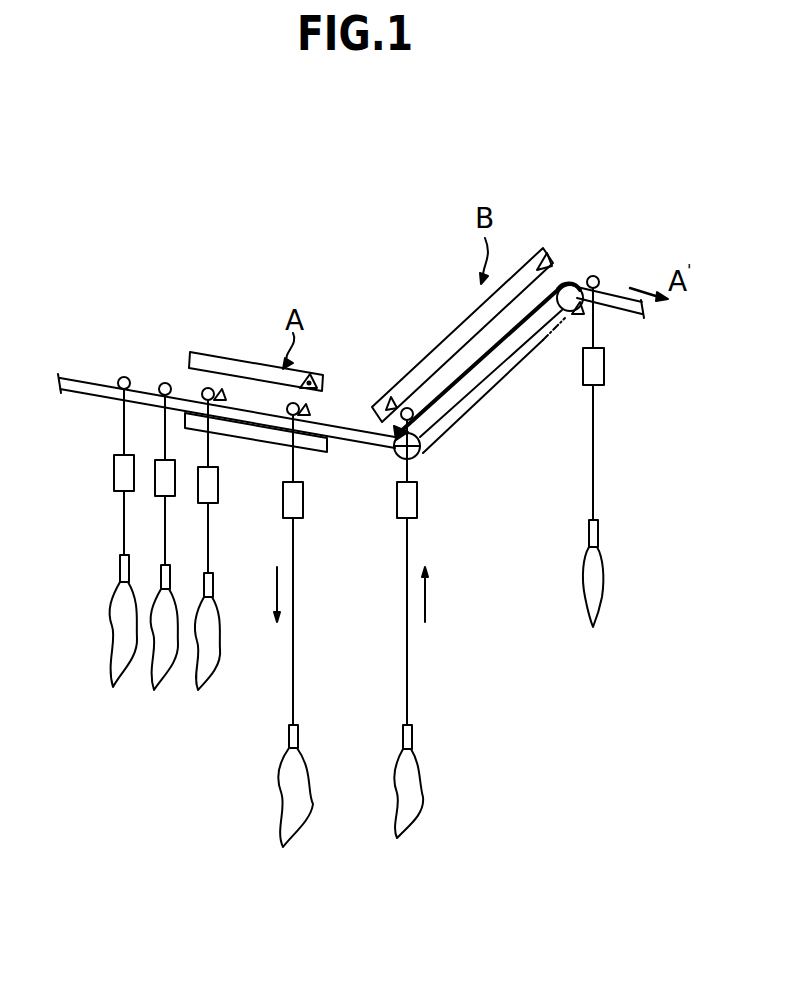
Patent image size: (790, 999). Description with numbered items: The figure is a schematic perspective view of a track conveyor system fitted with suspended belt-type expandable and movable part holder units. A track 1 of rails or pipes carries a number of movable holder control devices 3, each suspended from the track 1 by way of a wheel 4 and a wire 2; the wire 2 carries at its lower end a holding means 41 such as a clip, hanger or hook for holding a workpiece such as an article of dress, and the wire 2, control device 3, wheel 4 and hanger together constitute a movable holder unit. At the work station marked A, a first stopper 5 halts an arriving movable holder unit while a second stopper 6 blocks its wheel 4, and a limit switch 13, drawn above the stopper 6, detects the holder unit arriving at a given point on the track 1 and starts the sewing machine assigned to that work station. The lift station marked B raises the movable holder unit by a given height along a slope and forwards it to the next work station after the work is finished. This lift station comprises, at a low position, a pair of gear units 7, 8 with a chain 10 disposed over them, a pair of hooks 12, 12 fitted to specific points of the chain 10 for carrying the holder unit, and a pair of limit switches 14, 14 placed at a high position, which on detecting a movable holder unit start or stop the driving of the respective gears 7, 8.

The track 1 is at (81, 382).
The wire 2 is at (123, 433).
The movable holder control device 3 is at (303, 500).
The wheel 4 is at (162, 383).
The first stopper 5 is at (228, 393).
The second stopper 6 is at (309, 410).
The gear unit 7 is at (420, 448).
The gear unit 8 is at (562, 292).
The chain 10 is at (497, 380).
The hook 12 is at (393, 440).
The limit switch 13 is at (312, 373).
The limit switch 14 is at (390, 400).
The holding means 41 is at (412, 738).